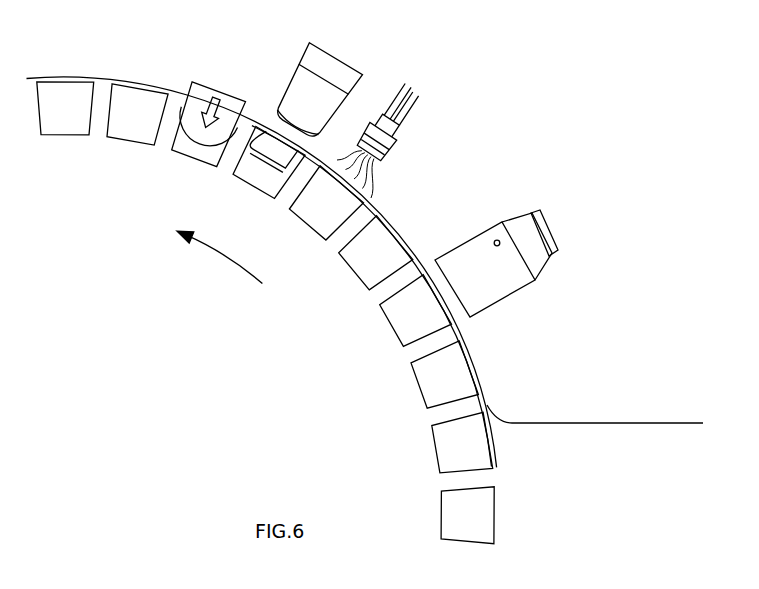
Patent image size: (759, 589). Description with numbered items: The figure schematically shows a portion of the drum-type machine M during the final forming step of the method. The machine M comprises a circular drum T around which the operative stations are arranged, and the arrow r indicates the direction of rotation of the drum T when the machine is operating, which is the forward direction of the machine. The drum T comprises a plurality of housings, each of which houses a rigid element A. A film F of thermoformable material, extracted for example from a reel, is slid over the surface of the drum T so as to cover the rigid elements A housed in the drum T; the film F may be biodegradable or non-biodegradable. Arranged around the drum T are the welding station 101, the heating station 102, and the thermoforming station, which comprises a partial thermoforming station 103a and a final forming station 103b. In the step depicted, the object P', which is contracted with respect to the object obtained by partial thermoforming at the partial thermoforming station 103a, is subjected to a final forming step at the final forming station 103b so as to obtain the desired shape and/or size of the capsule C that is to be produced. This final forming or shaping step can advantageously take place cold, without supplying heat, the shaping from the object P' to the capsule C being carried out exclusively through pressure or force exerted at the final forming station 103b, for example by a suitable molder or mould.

The welding station 101 is at (548, 217).
The heating station 102 is at (398, 142).
The partial thermoforming station 103a is at (340, 42).
The final forming station 103b is at (207, 80).
The capsule C is at (190, 143).
The rigid element A is at (202, 158).
The contracted object P' is at (259, 168).
The machine M is at (532, 147).
The film F is at (612, 423).
The drum T is at (123, 294).
The direction of rotation r is at (221, 257).